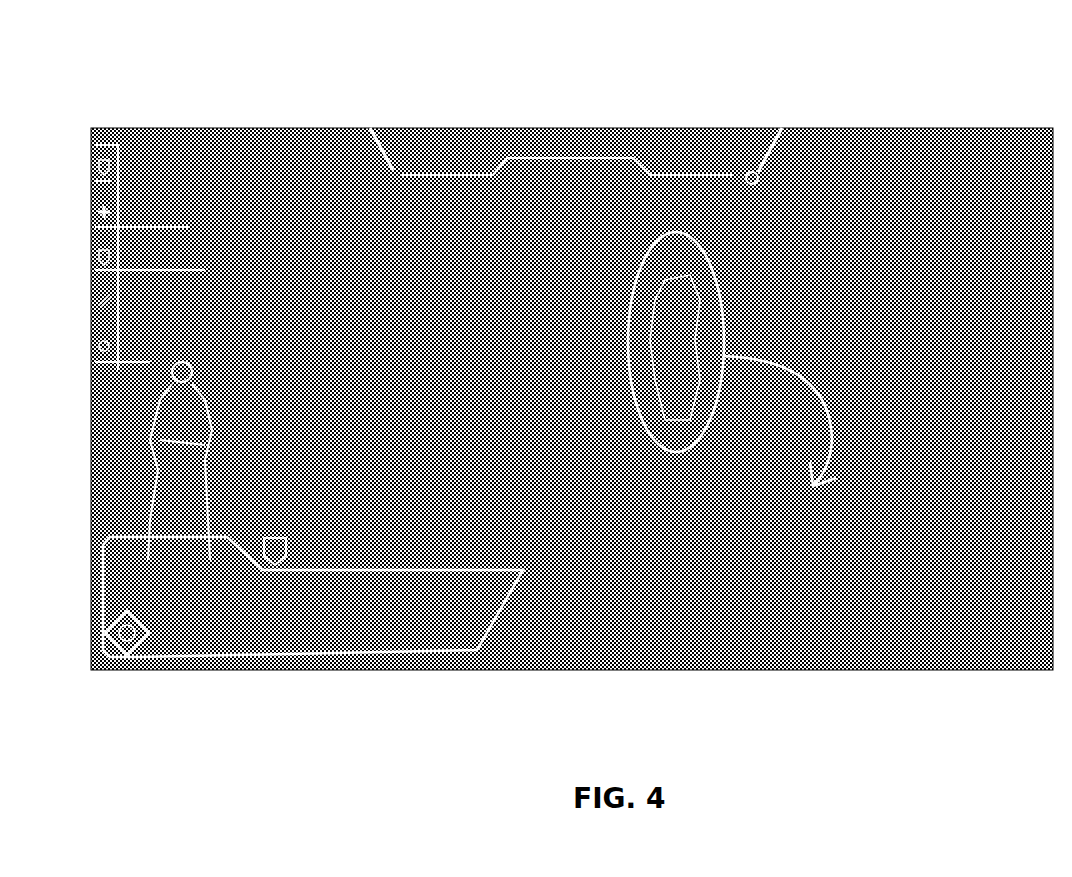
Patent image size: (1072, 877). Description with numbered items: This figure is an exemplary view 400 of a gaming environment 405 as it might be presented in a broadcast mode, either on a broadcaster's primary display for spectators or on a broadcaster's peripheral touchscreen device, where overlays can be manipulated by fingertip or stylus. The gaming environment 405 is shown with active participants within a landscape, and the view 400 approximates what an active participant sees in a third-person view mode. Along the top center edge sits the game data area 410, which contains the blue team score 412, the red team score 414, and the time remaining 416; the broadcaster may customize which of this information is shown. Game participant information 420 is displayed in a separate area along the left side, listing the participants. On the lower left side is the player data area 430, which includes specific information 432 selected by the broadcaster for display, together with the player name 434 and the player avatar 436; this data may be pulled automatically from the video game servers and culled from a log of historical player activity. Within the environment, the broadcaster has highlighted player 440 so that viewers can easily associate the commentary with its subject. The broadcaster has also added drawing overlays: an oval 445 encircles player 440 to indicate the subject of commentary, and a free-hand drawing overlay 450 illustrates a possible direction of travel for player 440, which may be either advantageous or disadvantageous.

The exemplary view 400 is at (225, 66).
The gaming environment 405 is at (926, 585).
The game data area 410 is at (576, 94).
The blue team score 412 is at (433, 128).
The red team score 414 is at (708, 128).
The time remaining 416 is at (624, 128).
The game participant information 420 is at (78, 243).
The player data area 430 is at (367, 665).
The specific information 432 is at (408, 660).
The player name 434 is at (502, 542).
The player avatar 436 is at (250, 430).
The player 440 is at (706, 383).
The oval 445 is at (687, 452).
The free-hand drawing overlay 450 is at (833, 440).